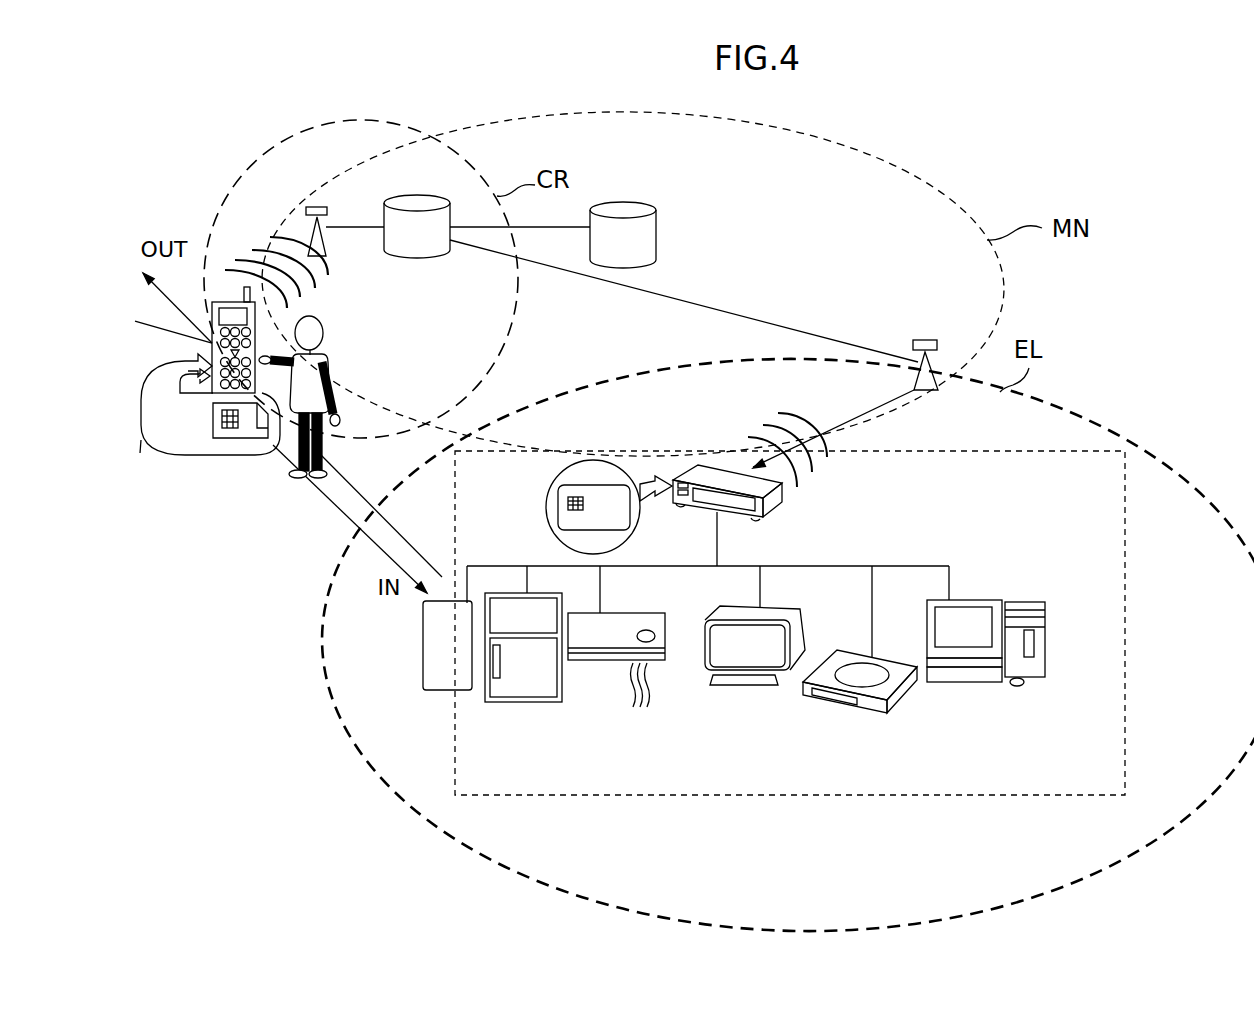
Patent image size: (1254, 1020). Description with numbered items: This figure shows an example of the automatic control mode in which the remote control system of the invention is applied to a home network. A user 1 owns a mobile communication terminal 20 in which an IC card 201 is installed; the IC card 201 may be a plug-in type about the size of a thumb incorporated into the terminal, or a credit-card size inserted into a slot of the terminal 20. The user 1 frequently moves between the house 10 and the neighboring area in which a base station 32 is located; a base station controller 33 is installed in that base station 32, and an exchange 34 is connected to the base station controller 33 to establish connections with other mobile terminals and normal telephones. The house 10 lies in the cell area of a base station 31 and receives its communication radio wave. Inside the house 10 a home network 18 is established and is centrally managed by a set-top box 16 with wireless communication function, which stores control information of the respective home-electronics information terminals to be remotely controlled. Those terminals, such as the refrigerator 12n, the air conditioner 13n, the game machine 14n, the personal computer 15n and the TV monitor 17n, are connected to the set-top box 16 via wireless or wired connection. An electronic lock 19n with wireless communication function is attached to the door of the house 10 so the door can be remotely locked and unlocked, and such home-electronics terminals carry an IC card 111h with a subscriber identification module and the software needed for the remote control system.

The user 1 is at (326, 361).
The house 10 is at (982, 796).
The refrigerator 12n is at (485, 678).
The air conditioner 13n is at (616, 613).
The game machine 14n is at (860, 713).
The personal computer 15n is at (937, 682).
The set-top box 16 is at (786, 492).
The TV monitor 17n is at (703, 657).
The home network 18 is at (863, 567).
The electronic lock 19n is at (423, 645).
The mobile communication terminal 20 is at (207, 384).
The IC card 201 is at (213, 420).
The base station 31 is at (938, 389).
The base station 32 is at (327, 258).
The base station controller 33 is at (423, 195).
The exchange 34 is at (623, 235).
The IC card 111h is at (548, 487).